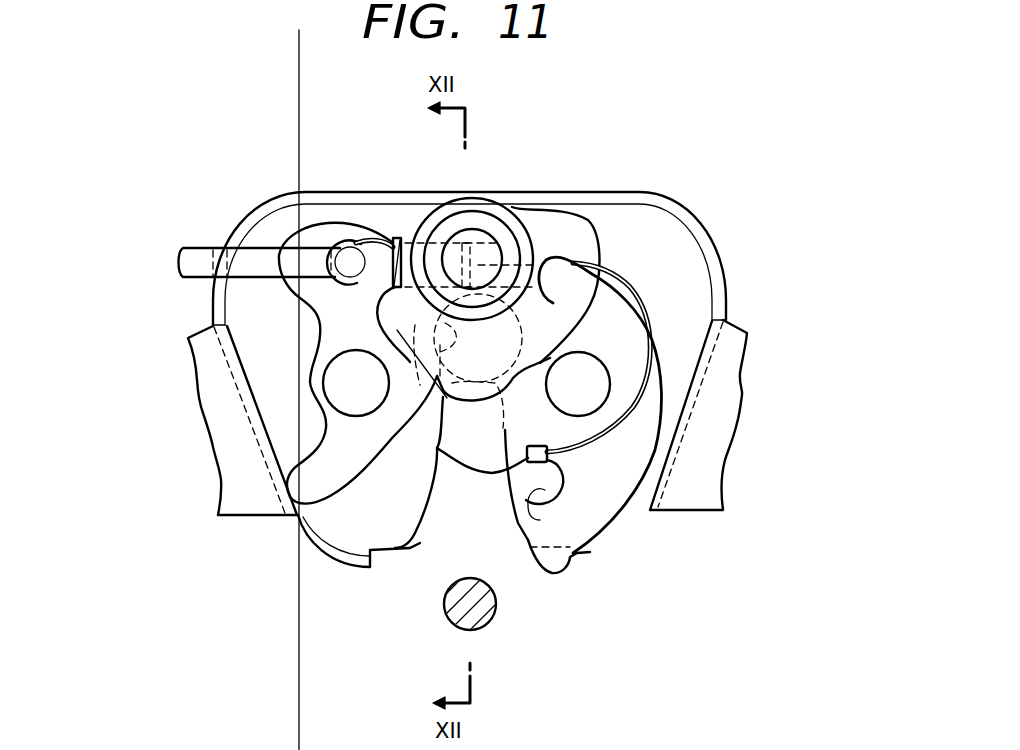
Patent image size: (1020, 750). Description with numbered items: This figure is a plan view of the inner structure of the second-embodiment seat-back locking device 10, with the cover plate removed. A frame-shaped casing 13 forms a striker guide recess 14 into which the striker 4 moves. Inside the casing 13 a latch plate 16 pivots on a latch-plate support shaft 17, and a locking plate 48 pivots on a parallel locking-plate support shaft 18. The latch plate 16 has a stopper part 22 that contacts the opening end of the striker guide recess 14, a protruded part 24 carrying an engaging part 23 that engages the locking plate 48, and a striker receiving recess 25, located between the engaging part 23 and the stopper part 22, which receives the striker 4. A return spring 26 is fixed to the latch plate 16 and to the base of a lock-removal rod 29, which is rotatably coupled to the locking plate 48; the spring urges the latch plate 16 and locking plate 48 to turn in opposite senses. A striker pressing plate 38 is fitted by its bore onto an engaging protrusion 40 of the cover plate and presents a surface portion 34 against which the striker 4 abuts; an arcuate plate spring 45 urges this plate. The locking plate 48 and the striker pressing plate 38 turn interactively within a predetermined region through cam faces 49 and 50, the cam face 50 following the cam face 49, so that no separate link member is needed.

The striker 4 is at (450, 605).
The lock device 10 is at (730, 220).
The casing 13 is at (652, 232).
The striker guide recess 14 is at (517, 529).
The latch plate 16 is at (622, 475).
The latch-plate support shaft 17 is at (595, 385).
The locking-plate support shaft 18 is at (342, 383).
The stopper part 22 is at (553, 575).
The engaging part 23 is at (458, 458).
The protruded part 24 is at (476, 404).
The striker receiving recess 25 is at (563, 497).
The return spring 26 is at (392, 243).
The lock-removal rod 29 is at (203, 248).
The surface portion 34 is at (477, 474).
The striker pressing plate 38 is at (570, 237).
The engaging protrusion 40 is at (487, 232).
The arcuate plate spring 45 is at (605, 283).
The locking plate 48 is at (342, 328).
The cam face 49 is at (465, 342).
The cam face 50 is at (414, 363).